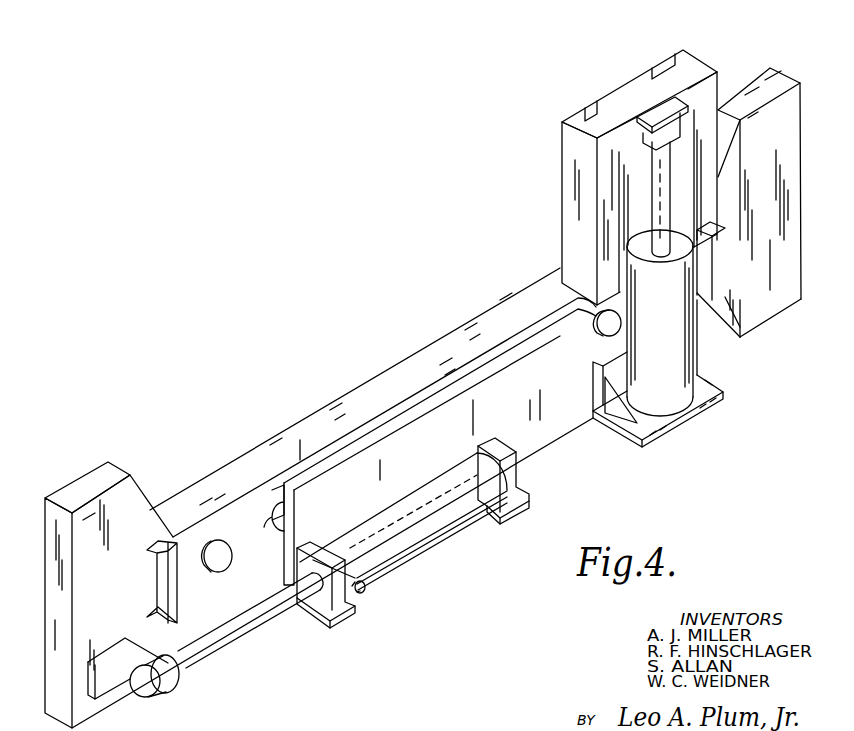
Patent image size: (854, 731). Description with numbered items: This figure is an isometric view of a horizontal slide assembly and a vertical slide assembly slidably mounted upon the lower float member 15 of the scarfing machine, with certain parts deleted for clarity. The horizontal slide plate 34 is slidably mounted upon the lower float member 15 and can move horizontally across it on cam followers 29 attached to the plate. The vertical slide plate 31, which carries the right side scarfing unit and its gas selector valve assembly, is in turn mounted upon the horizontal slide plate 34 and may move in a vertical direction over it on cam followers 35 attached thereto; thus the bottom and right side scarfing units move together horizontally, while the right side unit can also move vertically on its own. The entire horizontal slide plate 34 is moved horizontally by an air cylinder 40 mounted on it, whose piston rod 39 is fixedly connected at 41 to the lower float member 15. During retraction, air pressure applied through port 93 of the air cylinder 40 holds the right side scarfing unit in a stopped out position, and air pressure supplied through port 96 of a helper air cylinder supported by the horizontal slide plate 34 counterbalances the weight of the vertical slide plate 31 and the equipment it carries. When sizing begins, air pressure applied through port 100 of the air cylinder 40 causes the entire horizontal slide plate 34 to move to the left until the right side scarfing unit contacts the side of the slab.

The lower float member 15 is at (75, 488).
The cam followers 29 is at (225, 558).
The vertical slide plate 31 is at (572, 195).
The horizontal slide plate 34 is at (373, 430).
The cam followers 35 is at (614, 324).
The piston rod 39 is at (247, 629).
The air cylinder 40 is at (427, 541).
The connection point of piston rod to lower float member 41 is at (173, 686).
The port 93 is at (520, 509).
The port 96 is at (699, 369).
The port 100 is at (367, 589).